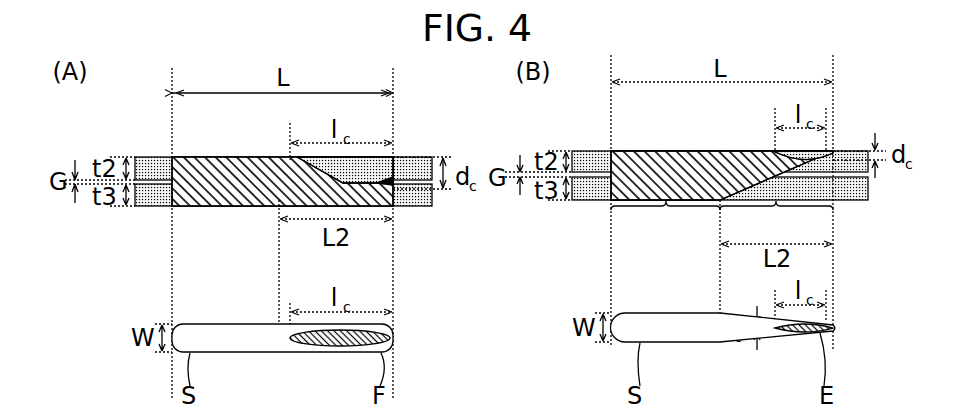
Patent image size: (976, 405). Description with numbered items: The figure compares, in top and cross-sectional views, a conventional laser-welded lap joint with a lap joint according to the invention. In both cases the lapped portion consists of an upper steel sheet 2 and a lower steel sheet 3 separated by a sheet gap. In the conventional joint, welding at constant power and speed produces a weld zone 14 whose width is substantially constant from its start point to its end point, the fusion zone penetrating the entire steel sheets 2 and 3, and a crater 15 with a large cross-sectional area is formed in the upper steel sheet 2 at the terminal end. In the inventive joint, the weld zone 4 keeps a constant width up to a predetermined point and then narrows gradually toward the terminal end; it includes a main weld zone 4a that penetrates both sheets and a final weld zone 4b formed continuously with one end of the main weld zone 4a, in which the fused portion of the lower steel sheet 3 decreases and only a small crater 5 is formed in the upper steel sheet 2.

The upper steel sheet 2 is at (152, 157).
The lower steel sheet 3 is at (152, 207).
The weld zone 14 is at (230, 160).
The crater 15 is at (340, 354).
The weld zone 4 is at (666, 314).
The main weld zone 4a is at (722, 196).
The final weld zone 4b is at (776, 221).
The crater 5 is at (790, 337).